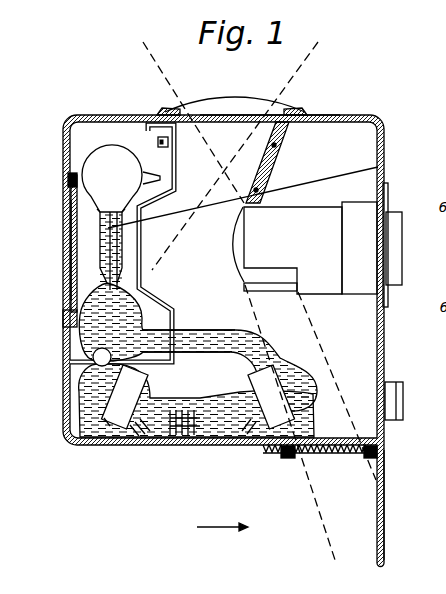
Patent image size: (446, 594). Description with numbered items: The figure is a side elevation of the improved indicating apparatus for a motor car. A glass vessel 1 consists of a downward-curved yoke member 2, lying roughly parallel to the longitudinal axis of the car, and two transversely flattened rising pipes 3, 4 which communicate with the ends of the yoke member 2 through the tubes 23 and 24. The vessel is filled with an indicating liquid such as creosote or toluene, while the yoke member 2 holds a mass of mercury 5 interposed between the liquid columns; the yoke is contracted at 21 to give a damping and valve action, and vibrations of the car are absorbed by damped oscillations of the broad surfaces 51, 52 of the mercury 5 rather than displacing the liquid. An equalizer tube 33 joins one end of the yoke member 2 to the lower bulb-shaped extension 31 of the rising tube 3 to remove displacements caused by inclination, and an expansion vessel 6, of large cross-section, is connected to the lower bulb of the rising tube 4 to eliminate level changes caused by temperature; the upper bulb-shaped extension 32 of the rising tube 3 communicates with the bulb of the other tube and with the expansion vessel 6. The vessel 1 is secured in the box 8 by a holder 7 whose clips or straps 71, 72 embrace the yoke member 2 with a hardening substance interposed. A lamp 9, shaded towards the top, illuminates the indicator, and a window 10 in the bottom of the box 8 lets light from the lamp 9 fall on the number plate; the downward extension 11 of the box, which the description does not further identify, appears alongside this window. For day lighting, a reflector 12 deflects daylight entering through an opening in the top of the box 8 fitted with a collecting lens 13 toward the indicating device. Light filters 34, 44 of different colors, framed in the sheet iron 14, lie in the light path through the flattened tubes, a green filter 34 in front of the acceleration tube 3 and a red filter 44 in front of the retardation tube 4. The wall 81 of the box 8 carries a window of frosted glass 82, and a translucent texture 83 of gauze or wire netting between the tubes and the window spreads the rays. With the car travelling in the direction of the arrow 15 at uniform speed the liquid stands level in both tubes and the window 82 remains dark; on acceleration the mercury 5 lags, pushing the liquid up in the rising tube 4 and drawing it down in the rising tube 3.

The glass vessel 1 is at (63, 400).
The yoke member 2 is at (173, 443).
The rising pipe 3 is at (112, 258).
The rising pipe 4 is at (416, 248).
The mass of mercury 5 is at (157, 443).
The expansion vessel 6 is at (108, 228).
The holder 7 is at (231, 443).
The box 8 is at (358, 115).
The lamp 9 is at (235, 242).
The window 10 is at (350, 452).
The side wall 11 is at (384, 523).
The reflector 12 is at (313, 128).
The collecting lens 13 is at (232, 100).
The sheet iron 14 is at (170, 163).
The arrow 15 is at (222, 538).
The contraction 21 is at (203, 437).
The tube 23 is at (233, 332).
The tube 24 is at (80, 377).
The lower bulb-shaped extension 31 is at (81, 325).
The bulb-shaped extension 32 is at (91, 162).
The equalizer tube 33 is at (93, 355).
The light filter 34 is at (99, 212).
The light filter 44 is at (414, 245).
The broad surface of the mercury 51 is at (135, 440).
The broad surface of the mercury 52 is at (258, 442).
The clip 71 is at (118, 420).
The clip 72 is at (293, 458).
The wall of the box 81 is at (68, 176).
The window of frosted glass 82 is at (72, 292).
The translucent texture 83 is at (72, 250).